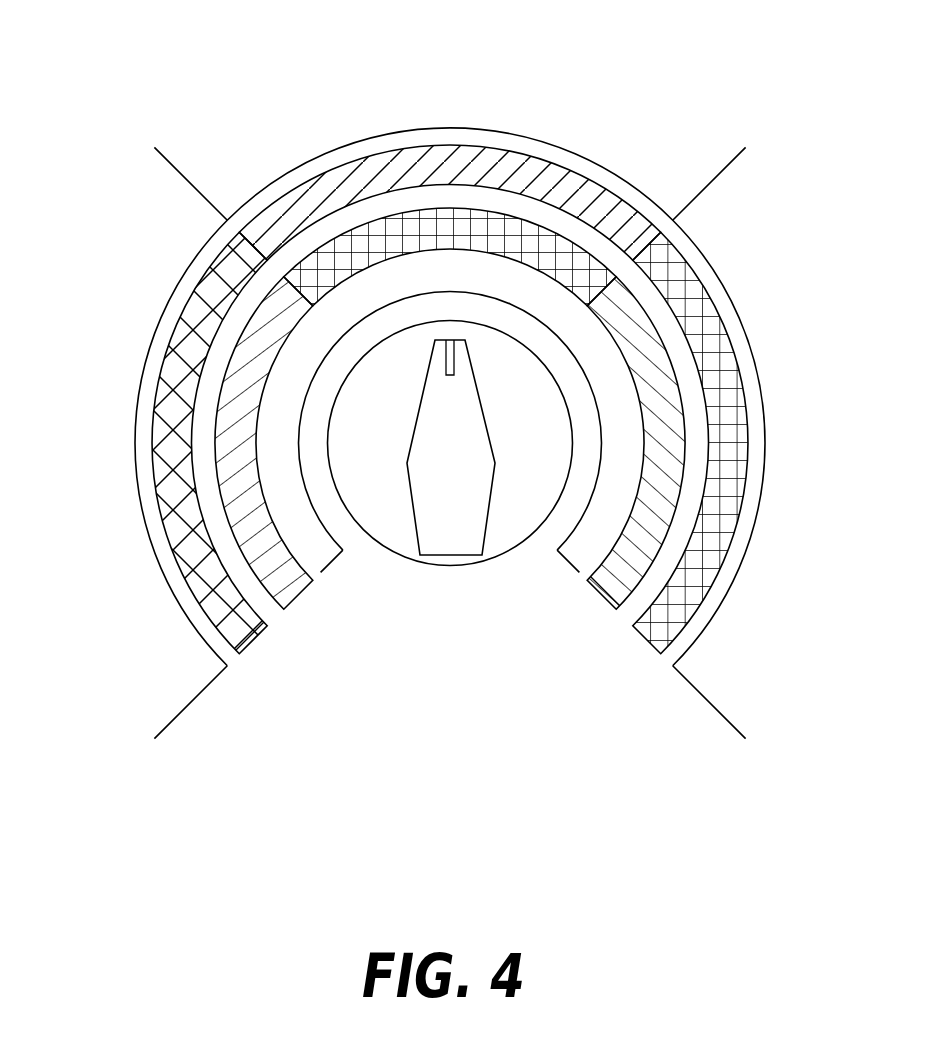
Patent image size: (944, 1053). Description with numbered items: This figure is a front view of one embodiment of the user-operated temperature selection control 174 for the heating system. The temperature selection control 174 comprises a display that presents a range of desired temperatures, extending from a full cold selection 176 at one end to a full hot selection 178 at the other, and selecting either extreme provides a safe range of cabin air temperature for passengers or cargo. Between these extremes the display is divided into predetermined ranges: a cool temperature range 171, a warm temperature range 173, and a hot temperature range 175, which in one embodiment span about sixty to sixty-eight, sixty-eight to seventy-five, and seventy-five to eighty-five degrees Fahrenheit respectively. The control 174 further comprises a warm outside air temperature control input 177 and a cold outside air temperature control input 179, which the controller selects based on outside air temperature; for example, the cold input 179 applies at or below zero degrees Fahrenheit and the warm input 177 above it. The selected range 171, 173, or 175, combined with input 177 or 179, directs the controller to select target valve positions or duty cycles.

The cool temperature range 171 is at (75, 444).
The warm temperature range 173 is at (467, 100).
The temperature selection control 174 is at (166, 72).
The hot temperature range 175 is at (855, 444).
The full cold selection 176 is at (349, 587).
The warm outside air temperature control input 177 is at (609, 624).
The full hot selection 178 is at (538, 586).
The cold outside air temperature control input 179 is at (258, 661).